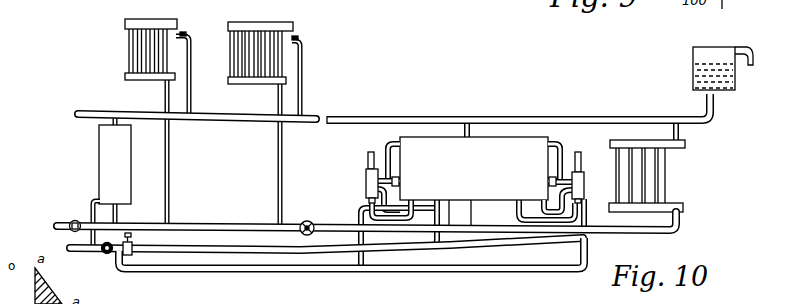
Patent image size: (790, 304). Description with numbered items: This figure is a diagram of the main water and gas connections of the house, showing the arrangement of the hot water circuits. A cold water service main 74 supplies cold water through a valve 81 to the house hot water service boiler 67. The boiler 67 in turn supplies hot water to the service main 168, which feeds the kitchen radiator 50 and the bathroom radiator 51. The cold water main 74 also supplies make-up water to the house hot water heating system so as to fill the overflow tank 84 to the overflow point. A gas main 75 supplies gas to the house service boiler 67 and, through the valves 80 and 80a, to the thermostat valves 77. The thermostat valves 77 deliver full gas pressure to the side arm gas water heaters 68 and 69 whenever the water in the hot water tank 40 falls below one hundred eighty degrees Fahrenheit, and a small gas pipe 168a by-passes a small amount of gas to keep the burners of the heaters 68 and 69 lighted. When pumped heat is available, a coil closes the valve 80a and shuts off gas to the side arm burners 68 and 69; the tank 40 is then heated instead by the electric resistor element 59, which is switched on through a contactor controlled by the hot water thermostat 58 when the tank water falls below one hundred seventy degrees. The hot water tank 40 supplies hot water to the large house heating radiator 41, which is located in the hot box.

The bathroom radiator 51 is at (164, 13).
The kitchen radiator 50 is at (259, 22).
The service main 168 is at (97, 111).
The house hot water service boiler 67 is at (99, 151).
The cold water service main 74 is at (66, 224).
The valve 81 is at (90, 214).
The gas main 75 is at (70, 246).
The valve 80 is at (104, 254).
The valve 80a is at (133, 246).
The small gas pipe 168a is at (248, 272).
The hot water storage tank 40 is at (489, 146).
The electric resistor element 59 is at (366, 178).
The side arm gas water heater 68 is at (366, 189).
The thermostat valves 77 is at (441, 180).
The hot water thermostat 58 is at (549, 182).
The side arm gas water heater 69 is at (584, 187).
The large house heating radiator 41 is at (665, 172).
The overflow tank 84 is at (693, 63).